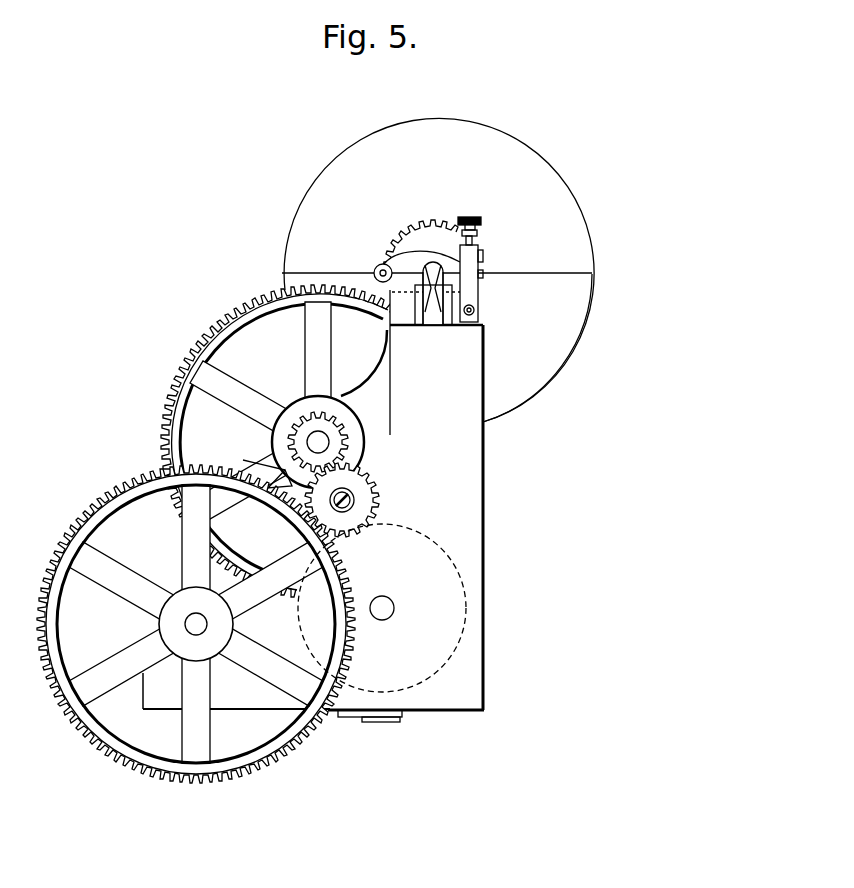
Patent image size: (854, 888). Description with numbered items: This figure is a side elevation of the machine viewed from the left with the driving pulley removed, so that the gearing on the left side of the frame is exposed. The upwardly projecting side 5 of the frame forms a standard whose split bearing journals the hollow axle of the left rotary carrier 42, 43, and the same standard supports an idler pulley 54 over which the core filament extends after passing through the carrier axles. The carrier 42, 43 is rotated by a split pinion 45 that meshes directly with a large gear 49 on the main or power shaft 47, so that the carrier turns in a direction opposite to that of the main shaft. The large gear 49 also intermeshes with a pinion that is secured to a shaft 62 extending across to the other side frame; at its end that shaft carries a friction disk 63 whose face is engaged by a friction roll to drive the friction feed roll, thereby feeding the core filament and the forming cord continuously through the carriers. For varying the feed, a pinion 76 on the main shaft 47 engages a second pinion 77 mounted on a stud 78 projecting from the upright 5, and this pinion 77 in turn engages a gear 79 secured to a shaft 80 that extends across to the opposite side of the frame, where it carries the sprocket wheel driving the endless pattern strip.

The upwardly projecting side 5 is at (477, 500).
The carrier 42 is at (500, 153).
The carrier 43 is at (552, 370).
The split pinion 45 is at (413, 233).
The main shaft 47 is at (318, 442).
The large gear 49 is at (221, 320).
The idler pulley 54 is at (438, 273).
The shaft 62 is at (388, 602).
The friction disk 63 is at (457, 588).
The pinion 76 is at (347, 442).
The second pinion 77 is at (372, 483).
The stud 78 is at (352, 503).
The gear 79 is at (275, 758).
The shaft 80 is at (196, 624).